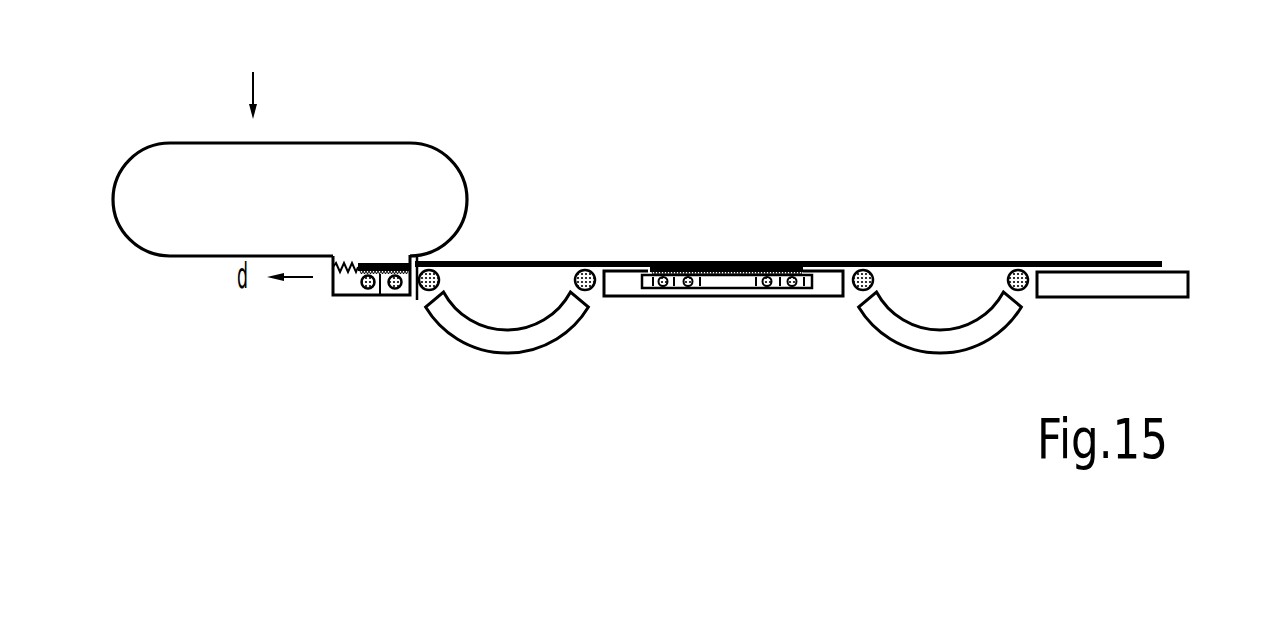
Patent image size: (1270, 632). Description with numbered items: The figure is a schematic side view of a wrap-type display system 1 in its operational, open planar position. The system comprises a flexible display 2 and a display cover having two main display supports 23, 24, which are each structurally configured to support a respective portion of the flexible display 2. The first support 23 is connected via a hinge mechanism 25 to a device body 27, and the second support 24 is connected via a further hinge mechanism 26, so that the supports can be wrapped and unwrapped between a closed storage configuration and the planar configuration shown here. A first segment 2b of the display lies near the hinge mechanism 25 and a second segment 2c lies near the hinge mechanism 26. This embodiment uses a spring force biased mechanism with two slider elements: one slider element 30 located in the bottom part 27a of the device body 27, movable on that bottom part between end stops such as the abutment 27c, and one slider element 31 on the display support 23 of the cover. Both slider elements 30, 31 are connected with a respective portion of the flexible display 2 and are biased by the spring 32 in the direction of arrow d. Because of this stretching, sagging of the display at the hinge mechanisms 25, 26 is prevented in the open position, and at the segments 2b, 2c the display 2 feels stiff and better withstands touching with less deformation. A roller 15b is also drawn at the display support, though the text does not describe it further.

The display system 1 is at (267, 67).
The flexible display 2 is at (672, 260).
The first segment of the display 2b is at (520, 260).
The second segment of the display 2c is at (917, 260).
The roller 15b is at (589, 290).
The first display support 23 is at (828, 283).
The second display support 24 is at (1117, 290).
The hinge mechanism 25 is at (530, 341).
The hinge mechanism 26 is at (928, 342).
The device body 27 is at (188, 228).
The bottom part of the device body 27a is at (351, 287).
The abutment 27c is at (417, 298).
The slider element 30 is at (382, 274).
The slider element 31 is at (778, 284).
The spring 32 is at (335, 281).